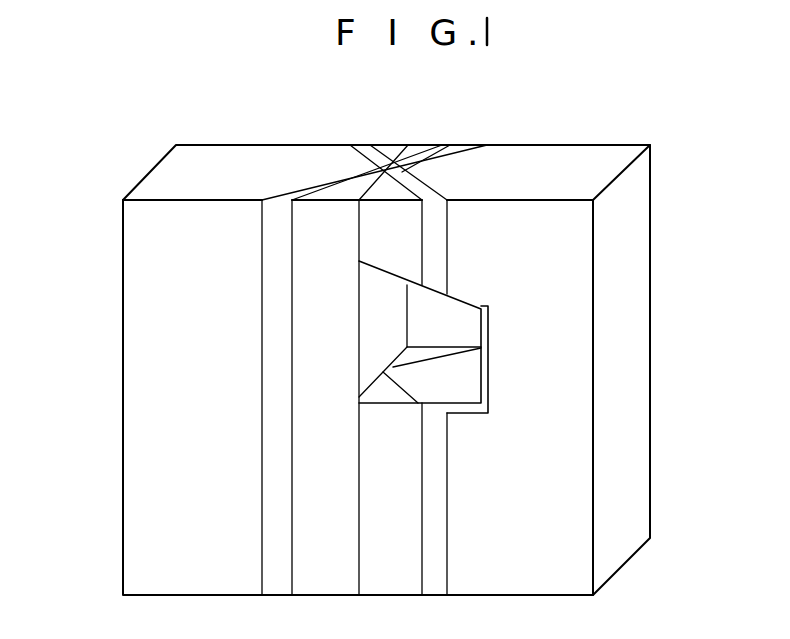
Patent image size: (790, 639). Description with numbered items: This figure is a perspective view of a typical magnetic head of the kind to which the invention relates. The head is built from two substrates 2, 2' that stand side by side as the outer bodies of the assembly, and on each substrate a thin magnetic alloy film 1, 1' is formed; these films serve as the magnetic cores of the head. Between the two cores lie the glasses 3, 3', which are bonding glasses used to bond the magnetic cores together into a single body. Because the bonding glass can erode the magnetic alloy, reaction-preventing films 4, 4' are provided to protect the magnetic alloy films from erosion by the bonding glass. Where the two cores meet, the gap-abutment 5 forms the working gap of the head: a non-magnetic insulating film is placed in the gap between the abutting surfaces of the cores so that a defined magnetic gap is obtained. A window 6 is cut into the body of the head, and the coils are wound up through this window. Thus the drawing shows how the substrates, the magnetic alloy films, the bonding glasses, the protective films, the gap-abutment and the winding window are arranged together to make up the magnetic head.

The magnetic alloy film 1 is at (300, 368).
The magnetic alloy film 1' is at (459, 346).
The substrate 2 is at (357, 370).
The substrate 2' is at (579, 370).
The glass 3 is at (304, 302).
The glass 3' is at (440, 331).
The reaction-preventing film 4 is at (389, 111).
The reaction-preventing film 4' is at (433, 114).
The gap-abutment 5 is at (358, 243).
The window 6 is at (488, 306).